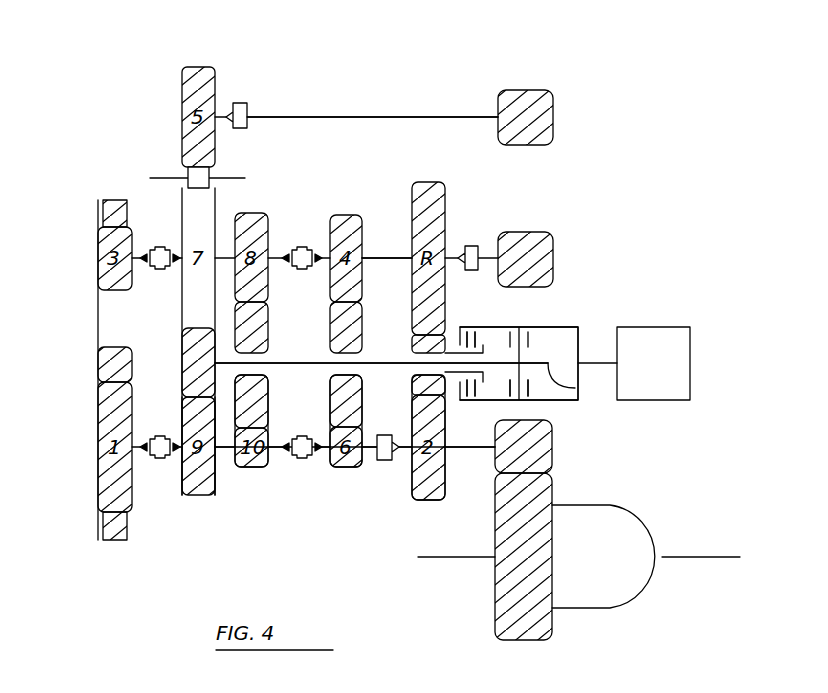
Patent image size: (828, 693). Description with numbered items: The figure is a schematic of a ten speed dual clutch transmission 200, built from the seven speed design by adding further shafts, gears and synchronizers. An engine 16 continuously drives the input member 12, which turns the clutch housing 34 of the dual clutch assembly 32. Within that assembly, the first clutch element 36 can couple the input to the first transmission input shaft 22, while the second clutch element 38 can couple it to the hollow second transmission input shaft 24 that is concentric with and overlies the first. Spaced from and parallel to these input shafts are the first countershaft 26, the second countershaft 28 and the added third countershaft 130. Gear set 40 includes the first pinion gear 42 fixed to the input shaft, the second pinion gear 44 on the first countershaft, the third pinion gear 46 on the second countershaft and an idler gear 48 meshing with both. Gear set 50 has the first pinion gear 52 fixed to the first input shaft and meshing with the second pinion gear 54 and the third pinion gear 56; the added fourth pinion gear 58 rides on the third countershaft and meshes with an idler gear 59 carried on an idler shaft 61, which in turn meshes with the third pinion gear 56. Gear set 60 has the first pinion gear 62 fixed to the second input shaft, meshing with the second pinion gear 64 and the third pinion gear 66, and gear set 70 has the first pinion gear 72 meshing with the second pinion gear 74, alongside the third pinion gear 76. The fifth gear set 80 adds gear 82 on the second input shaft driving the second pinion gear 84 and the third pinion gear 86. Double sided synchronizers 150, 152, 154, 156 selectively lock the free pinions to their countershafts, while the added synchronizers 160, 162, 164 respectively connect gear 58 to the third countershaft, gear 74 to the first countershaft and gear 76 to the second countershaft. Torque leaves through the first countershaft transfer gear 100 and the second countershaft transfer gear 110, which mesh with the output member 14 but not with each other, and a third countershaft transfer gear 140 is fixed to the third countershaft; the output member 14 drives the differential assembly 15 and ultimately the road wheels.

The ten speed dual clutch transmission 200 is at (607, 95).
The input member 12 is at (603, 327).
The output member 14 is at (495, 630).
The differential assembly 15 is at (630, 503).
The engine 16 is at (653, 363).
The first transmission input shaft 22 is at (578, 385).
The second transmission input shaft 24 is at (298, 363).
The first countershaft 26 is at (220, 447).
The second countershaft 28 is at (395, 258).
The dual clutch assembly 32 is at (589, 318).
The clutch housing 34 is at (535, 327).
The first clutch element 36 is at (530, 400).
The second clutch element 38 is at (485, 330).
The co-planar gear set 40 is at (113, 547).
The first pinion gear 42 is at (98, 360).
The second pinion gear 44 is at (98, 483).
The third pinion gear 46 is at (98, 258).
The idler gear 48 is at (103, 212).
The co-planar gear set 50 is at (196, 513).
The first pinion gear 52 is at (182, 383).
The second pinion gear 54 is at (205, 495).
The third pinion gear 56 is at (182, 232).
The fourth pinion gear 58 is at (182, 98).
The idler gear 59 is at (209, 178).
The co-planar gear set 60 is at (345, 478).
The idler shaft 61 is at (165, 178).
The first pinion gear 62 is at (362, 320).
The second pinion gear 64 is at (330, 435).
The third pinion gear 66 is at (348, 215).
The co-planar gear set 70 is at (416, 512).
The first pinion gear 72 is at (412, 345).
The second pinion gear 74 is at (445, 386).
The third pinion gear 76 is at (445, 199).
The fifth gear set 80 is at (257, 478).
The gear 82 is at (268, 320).
The second pinion gear 84 is at (268, 457).
The third pinion gear 86 is at (255, 213).
The first countershaft transfer gear 100 is at (552, 437).
The second countershaft transfer gear 110 is at (553, 250).
The third countershaft 130 is at (390, 117).
The third countershaft transfer gear 140 is at (553, 127).
The synchronizer 150 is at (160, 460).
The synchronizer 152 is at (158, 270).
The synchronizer 154 is at (300, 460).
The synchronizer 156 is at (300, 246).
The synchronizer 160 is at (240, 103).
The synchronizer 162 is at (383, 460).
The synchronizer 164 is at (470, 246).